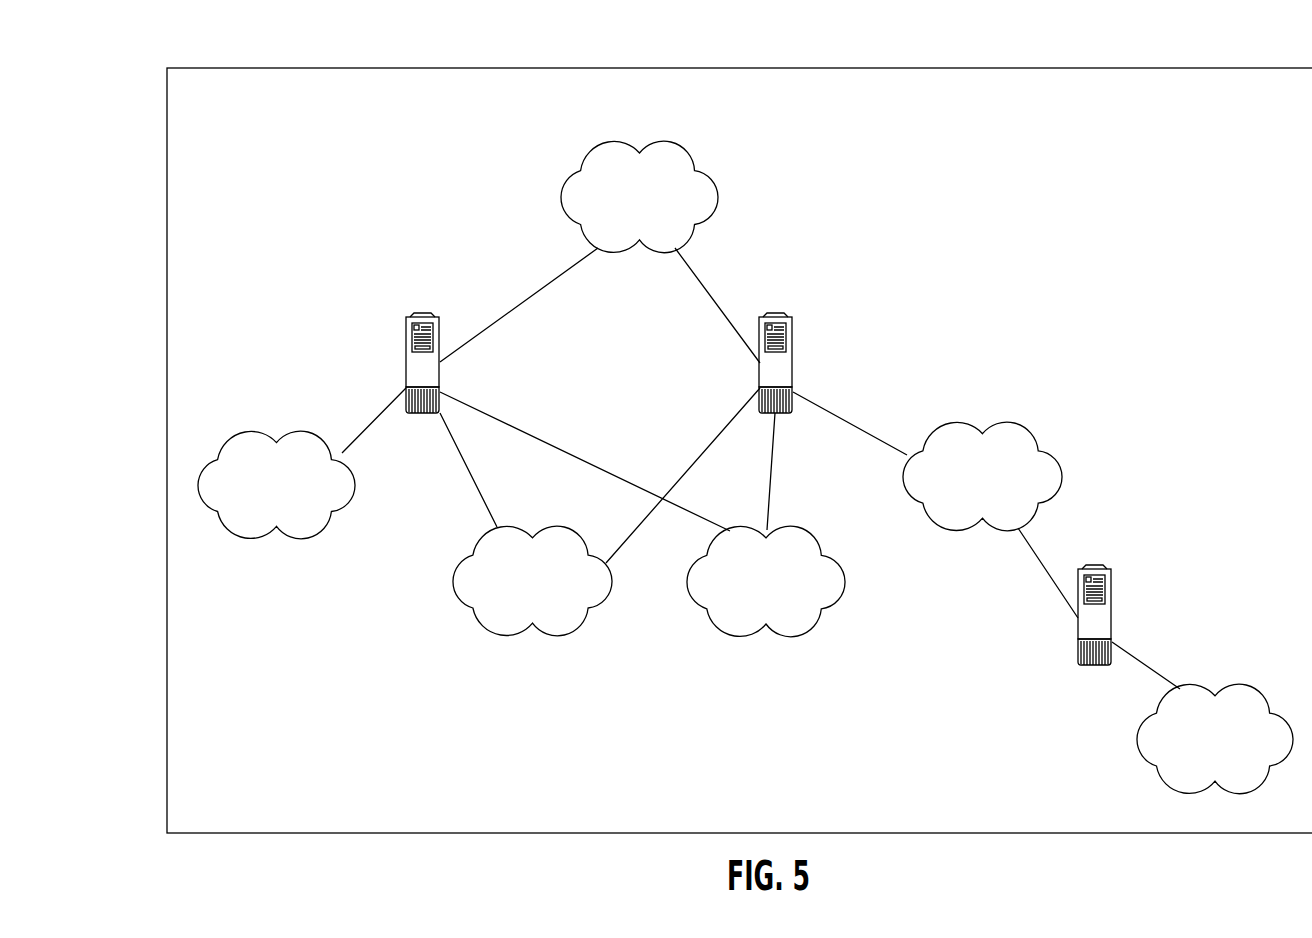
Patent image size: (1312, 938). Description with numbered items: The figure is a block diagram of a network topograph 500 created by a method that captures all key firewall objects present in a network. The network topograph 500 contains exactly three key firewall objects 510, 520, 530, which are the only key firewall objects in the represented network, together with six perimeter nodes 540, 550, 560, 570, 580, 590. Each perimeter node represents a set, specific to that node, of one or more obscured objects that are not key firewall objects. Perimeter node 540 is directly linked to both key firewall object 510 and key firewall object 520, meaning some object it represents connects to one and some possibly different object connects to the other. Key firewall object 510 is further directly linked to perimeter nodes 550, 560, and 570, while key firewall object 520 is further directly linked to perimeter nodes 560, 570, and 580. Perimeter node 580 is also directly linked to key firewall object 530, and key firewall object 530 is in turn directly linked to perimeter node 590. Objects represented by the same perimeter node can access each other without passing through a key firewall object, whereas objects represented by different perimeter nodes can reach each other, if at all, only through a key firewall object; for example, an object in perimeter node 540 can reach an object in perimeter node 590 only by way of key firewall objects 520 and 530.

The network topograph 500 is at (1042, 68).
The key firewall object 510 is at (440, 318).
The key firewall object 520 is at (793, 318).
The key firewall object 530 is at (1112, 570).
The perimeter node 540 is at (678, 148).
The perimeter node 550 is at (334, 437).
The perimeter node 560 is at (568, 529).
The perimeter node 570 is at (806, 533).
The perimeter node 580 is at (1018, 428).
The perimeter node 590 is at (1255, 688).